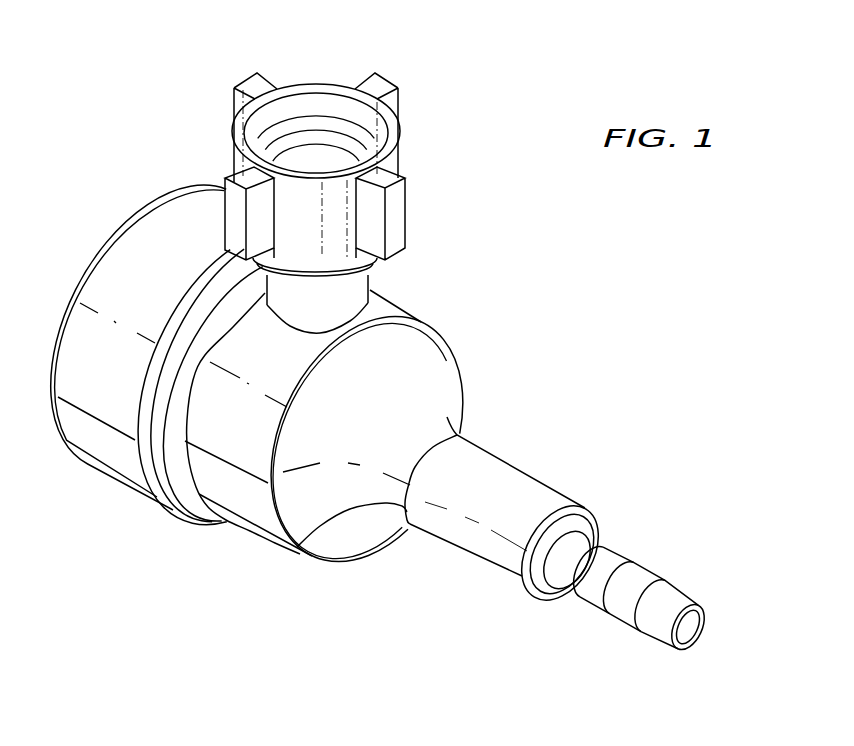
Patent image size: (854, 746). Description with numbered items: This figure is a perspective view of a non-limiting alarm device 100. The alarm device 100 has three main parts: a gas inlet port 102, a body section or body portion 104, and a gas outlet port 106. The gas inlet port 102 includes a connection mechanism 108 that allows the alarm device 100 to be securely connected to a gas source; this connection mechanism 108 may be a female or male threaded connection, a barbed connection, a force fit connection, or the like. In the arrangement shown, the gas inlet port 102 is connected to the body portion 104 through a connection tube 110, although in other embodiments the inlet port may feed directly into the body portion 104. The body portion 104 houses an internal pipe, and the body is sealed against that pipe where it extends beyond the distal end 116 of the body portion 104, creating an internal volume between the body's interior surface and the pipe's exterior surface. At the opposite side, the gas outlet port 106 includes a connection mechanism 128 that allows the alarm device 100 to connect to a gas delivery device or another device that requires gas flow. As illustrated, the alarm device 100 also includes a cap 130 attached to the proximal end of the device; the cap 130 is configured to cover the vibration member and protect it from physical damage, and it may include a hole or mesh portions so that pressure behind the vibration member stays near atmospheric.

The alarm device 100 is at (616, 361).
The gas inlet port 102 is at (317, 132).
The body portion 104 is at (250, 554).
The gas outlet port 106 is at (700, 624).
The connection mechanism 108 is at (397, 217).
The connection tube 110 is at (343, 295).
The distal end 116 is at (413, 397).
The connection mechanism 128 is at (637, 577).
The cap 130 is at (155, 265).